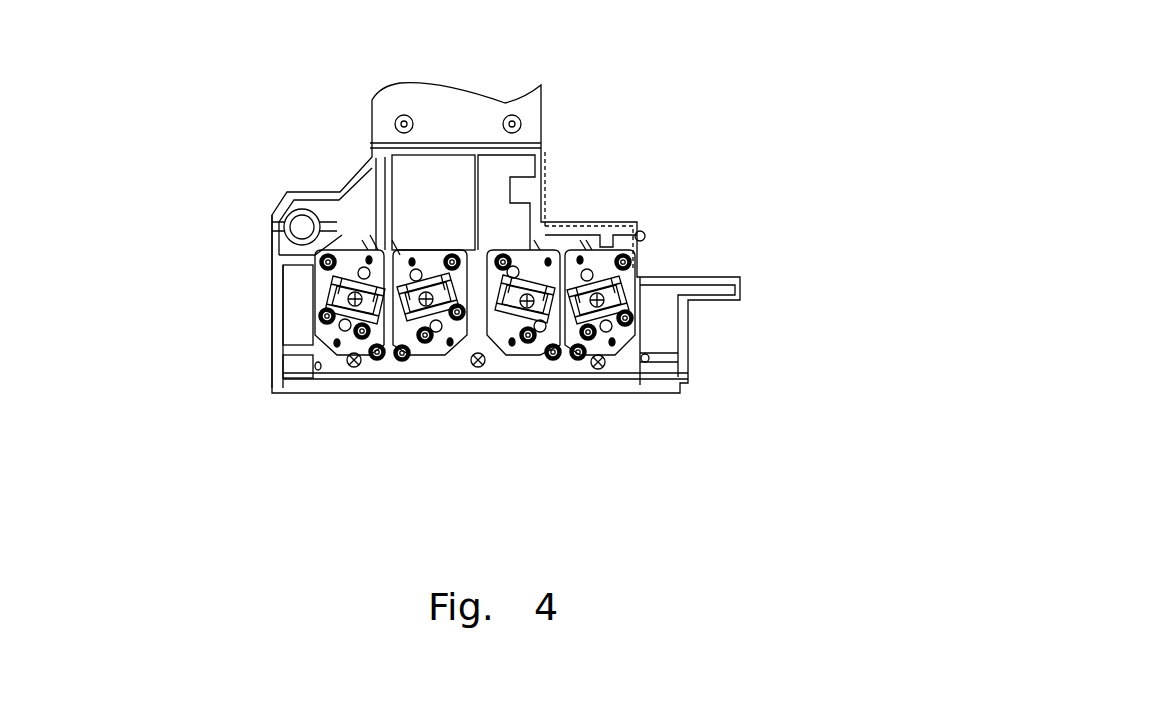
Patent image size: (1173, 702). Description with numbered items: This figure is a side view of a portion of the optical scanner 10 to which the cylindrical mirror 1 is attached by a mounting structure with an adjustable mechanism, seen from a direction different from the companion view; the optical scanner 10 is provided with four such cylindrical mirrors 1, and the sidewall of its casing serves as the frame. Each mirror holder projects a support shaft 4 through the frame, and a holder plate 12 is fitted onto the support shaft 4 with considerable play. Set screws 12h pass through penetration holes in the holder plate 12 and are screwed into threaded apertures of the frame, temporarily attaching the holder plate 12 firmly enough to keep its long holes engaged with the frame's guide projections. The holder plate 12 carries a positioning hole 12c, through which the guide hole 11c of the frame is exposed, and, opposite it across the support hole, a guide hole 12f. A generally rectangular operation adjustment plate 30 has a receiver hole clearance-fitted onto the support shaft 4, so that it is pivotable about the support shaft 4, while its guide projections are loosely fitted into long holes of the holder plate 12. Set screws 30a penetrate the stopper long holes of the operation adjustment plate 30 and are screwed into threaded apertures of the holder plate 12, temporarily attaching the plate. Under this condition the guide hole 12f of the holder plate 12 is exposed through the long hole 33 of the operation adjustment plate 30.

The optical scanner 10 is at (698, 135).
The holder plate 12 is at (320, 285).
The positioning hole 12c is at (380, 250).
The guide hole 12f is at (330, 320).
The set screw 12h is at (467, 250).
The guide hole 11c is at (366, 252).
The cylindrical mirror 1 is at (351, 262).
The support shaft 4 is at (350, 215).
The operation adjustment plate 30 is at (325, 305).
The set screw 30a is at (310, 315).
The long hole 33 is at (320, 338).